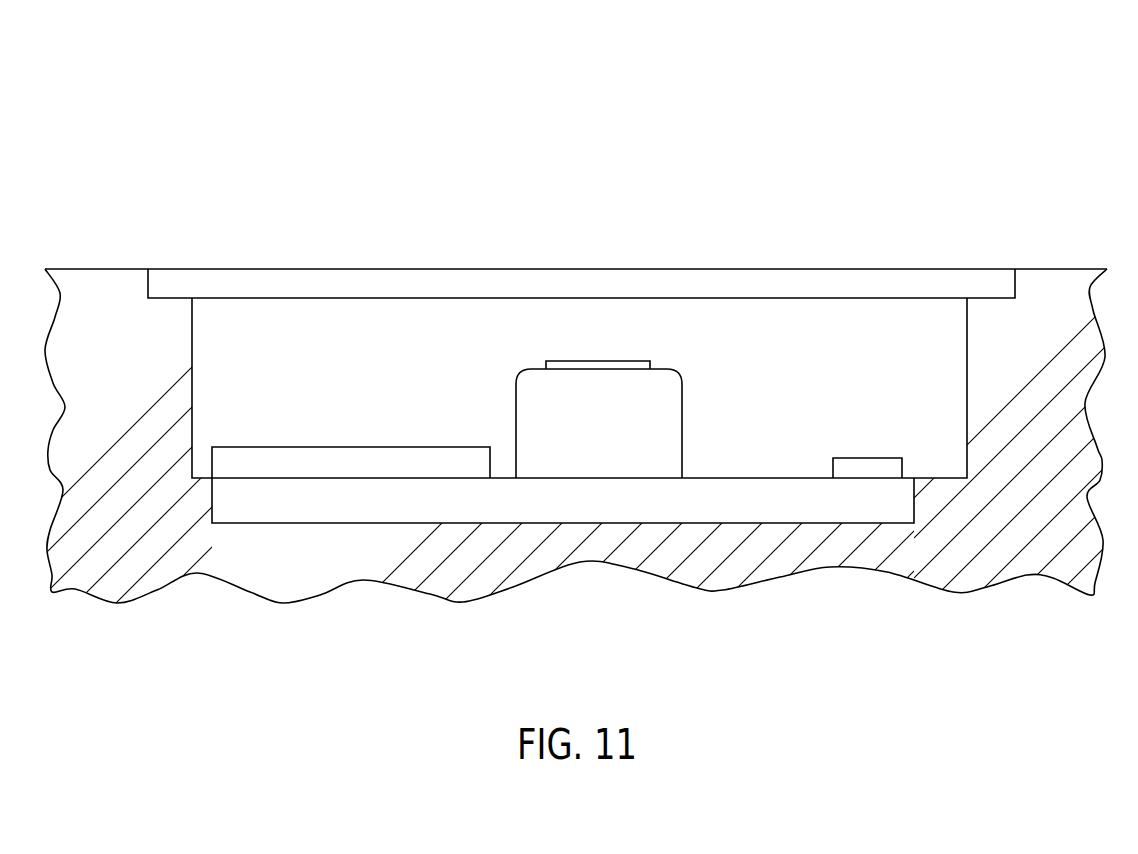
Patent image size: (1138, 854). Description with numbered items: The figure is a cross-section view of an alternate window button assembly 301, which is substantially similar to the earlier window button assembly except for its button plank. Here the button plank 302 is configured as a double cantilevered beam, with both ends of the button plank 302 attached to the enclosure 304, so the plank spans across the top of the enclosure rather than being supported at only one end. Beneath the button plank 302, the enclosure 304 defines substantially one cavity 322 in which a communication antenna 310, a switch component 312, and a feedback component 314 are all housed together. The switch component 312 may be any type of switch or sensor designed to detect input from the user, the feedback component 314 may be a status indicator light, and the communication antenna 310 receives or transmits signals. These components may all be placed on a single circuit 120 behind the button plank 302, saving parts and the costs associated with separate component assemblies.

The window button assembly 301 is at (912, 154).
The button plank 302 is at (590, 279).
The enclosure 304 is at (156, 542).
The communication antenna 310 is at (400, 466).
The switch component 312 is at (663, 383).
The feedback component 314 is at (870, 468).
The circuit 120 is at (607, 503).
The cavity 322 is at (350, 325).